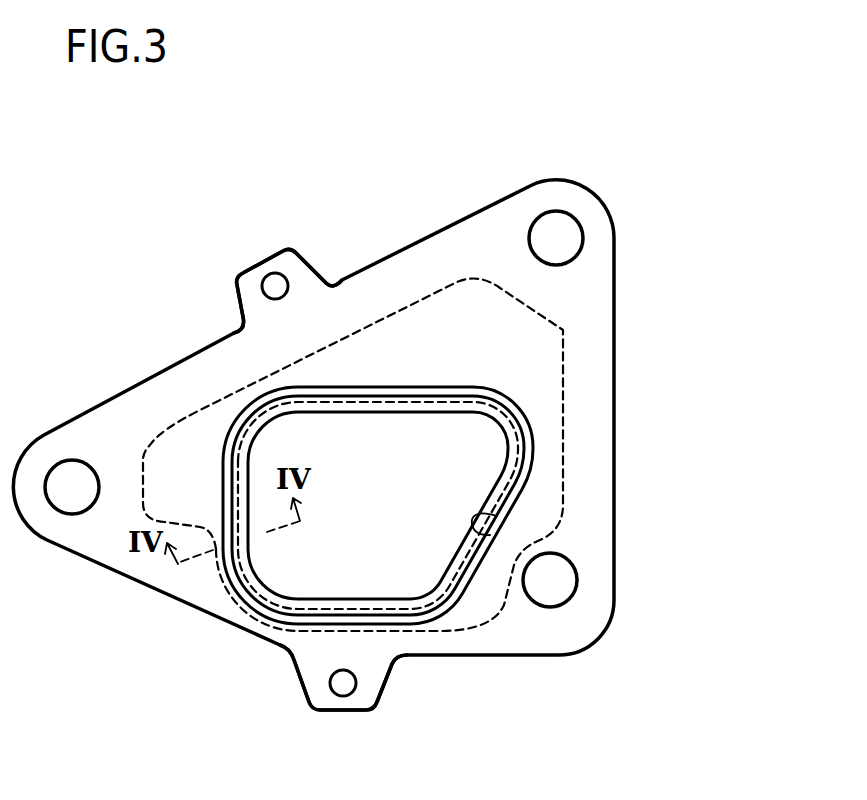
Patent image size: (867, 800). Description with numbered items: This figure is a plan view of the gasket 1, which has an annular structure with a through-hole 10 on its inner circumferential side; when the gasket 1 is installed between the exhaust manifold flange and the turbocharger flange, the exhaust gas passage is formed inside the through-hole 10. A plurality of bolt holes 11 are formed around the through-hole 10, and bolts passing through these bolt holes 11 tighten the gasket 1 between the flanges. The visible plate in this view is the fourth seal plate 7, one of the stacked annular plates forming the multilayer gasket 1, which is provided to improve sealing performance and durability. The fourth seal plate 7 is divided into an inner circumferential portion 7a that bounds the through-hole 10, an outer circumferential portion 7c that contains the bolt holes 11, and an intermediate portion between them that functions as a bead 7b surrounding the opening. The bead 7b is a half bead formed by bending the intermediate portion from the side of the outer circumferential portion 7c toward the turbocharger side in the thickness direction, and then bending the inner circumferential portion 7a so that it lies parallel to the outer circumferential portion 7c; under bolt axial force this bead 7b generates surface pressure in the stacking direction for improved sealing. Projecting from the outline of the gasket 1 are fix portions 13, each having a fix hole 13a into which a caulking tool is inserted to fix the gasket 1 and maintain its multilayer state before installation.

The gasket 1 is at (562, 151).
The fourth seal plate 7 is at (439, 455).
The inner circumferential portion 7a is at (512, 490).
The bead 7b is at (525, 448).
The outer circumferential portion 7c is at (594, 389).
The through-hole 10 is at (497, 516).
The bolt hole 11 is at (576, 252).
The fix portion 13 is at (291, 264).
The fix hole 13a is at (277, 287).